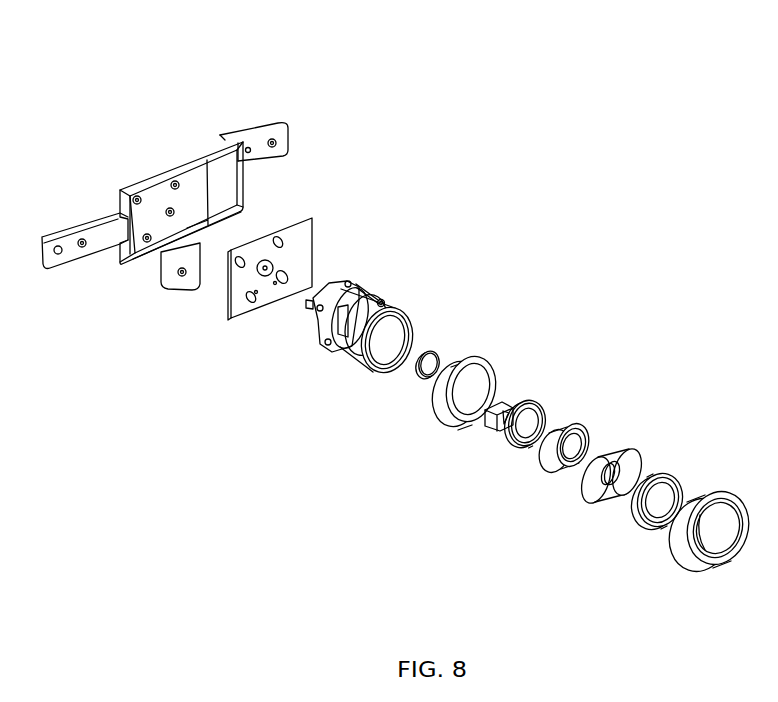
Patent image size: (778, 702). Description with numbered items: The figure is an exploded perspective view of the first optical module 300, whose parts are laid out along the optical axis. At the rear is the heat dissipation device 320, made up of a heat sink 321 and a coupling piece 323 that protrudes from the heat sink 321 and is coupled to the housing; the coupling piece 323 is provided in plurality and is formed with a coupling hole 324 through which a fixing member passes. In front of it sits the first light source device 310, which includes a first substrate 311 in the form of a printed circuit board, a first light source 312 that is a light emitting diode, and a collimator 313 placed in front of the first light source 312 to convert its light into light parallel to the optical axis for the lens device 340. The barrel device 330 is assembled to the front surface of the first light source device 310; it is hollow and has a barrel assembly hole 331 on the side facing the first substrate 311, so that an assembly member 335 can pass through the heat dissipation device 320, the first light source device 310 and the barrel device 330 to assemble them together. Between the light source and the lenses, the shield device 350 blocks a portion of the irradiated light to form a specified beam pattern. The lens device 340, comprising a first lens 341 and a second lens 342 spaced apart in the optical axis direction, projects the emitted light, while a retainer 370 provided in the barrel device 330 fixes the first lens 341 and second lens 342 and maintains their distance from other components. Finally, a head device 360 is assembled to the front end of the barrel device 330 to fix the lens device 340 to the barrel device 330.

The first optical module 300 is at (373, 92).
The first light source device 310 is at (345, 175).
The first substrate 311 is at (312, 219).
The first light source 312 is at (262, 270).
The collimator 313 is at (433, 352).
The heat dissipation device 320 is at (156, 97).
The heat sink 321 is at (207, 158).
The coupling piece 323 is at (253, 135).
The coupling hole 324 is at (286, 126).
The barrel device 330 is at (385, 303).
The barrel assembly hole 331 is at (372, 310).
The assembly member 335 is at (380, 300).
The lens device 340 is at (612, 362).
The first lens 341 is at (570, 425).
The second lens 342 is at (663, 473).
The shield device 350 is at (515, 391).
The head device 360 is at (710, 494).
The retainer 370 is at (585, 479).